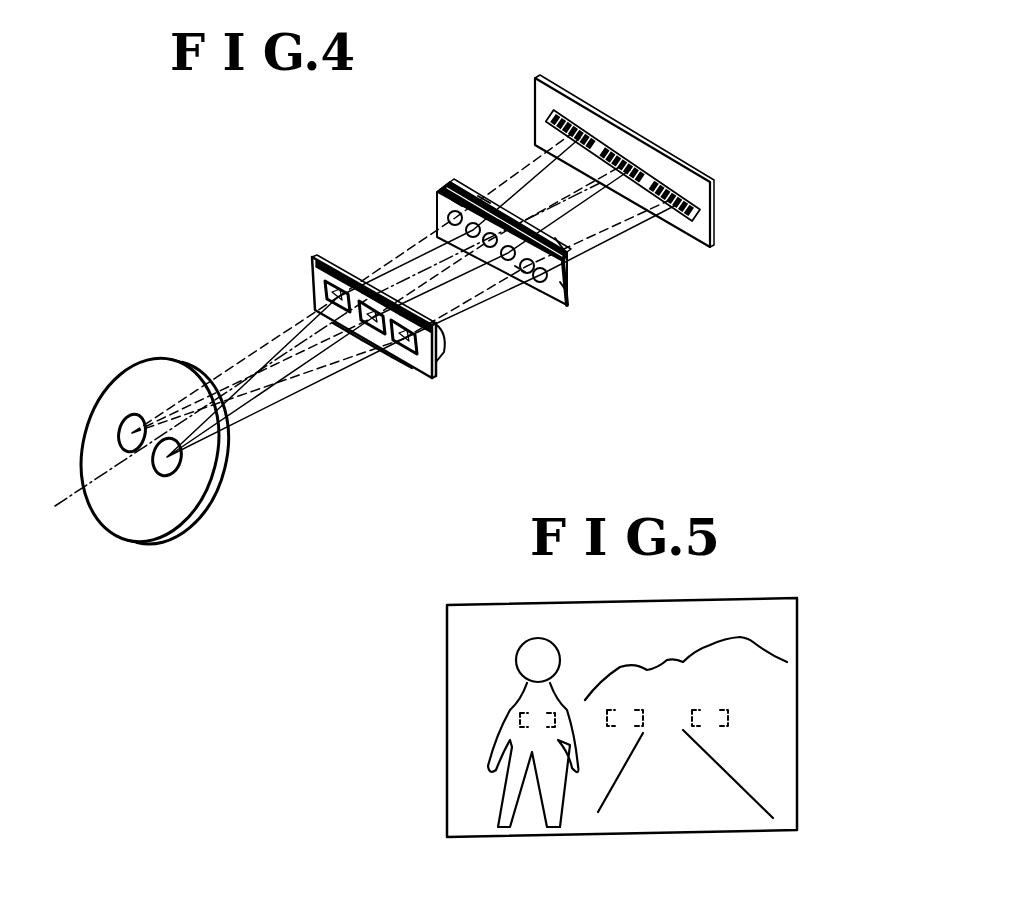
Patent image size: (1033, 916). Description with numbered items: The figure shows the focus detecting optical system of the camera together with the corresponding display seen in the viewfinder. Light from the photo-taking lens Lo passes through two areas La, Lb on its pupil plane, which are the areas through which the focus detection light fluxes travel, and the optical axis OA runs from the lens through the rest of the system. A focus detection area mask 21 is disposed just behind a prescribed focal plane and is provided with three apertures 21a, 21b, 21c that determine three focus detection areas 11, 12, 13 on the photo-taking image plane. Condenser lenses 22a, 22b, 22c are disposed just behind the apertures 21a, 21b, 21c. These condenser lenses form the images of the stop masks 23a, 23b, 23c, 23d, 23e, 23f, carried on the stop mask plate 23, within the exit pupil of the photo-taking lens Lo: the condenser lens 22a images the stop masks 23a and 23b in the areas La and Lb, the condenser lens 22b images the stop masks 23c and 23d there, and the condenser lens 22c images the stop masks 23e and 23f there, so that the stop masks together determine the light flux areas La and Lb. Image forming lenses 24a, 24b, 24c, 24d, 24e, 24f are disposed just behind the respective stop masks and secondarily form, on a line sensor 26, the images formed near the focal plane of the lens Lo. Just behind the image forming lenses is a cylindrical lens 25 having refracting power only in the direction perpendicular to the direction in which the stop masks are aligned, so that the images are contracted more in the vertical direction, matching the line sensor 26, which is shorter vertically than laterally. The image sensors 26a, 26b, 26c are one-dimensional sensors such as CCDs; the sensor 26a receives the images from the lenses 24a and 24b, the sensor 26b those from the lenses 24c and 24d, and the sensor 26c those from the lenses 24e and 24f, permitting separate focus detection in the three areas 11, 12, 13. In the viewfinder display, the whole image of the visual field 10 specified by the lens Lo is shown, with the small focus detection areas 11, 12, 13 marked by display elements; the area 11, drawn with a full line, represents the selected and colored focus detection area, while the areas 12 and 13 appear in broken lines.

In FIG. 5, the whole image of visual field 10 is at (470, 642).
In FIG. 5, the focus detection area 11 is at (520, 720).
In FIG. 5, the focus detection area 12 is at (612, 728).
In FIG. 5, the focus detection area 13 is at (720, 728).
In FIG. 4, the focus detection area mask 21 is at (428, 378).
In FIG. 4, the aperture 21a is at (330, 290).
In FIG. 4, the aperture 21b is at (372, 340).
In FIG. 4, the aperture 21c is at (402, 354).
In FIG. 4, the condenser lens 22a is at (345, 268).
In FIG. 4, the condenser lens 22b is at (378, 272).
In FIG. 4, the condenser lens 22c is at (442, 336).
In FIG. 4, the stop mask plate 23 is at (572, 300).
In FIG. 4, the stop mask 23a is at (455, 208).
In FIG. 4, the stop mask 23b is at (484, 198).
In FIG. 4, the stop mask 23c is at (503, 224).
In FIG. 4, the stop mask 23d is at (560, 244).
In FIG. 4, the stop mask 23e is at (520, 274).
In FIG. 4, the stop mask 23f is at (566, 285).
In FIG. 4, the image forming lens 24a is at (450, 212).
In FIG. 4, the image forming lens 24b is at (467, 226).
In FIG. 4, the image forming lens 24c is at (484, 240).
In FIG. 4, the image forming lens 24d is at (508, 262).
In FIG. 4, the image forming lens 24e is at (529, 275).
In FIG. 4, the image forming lens 24f is at (546, 283).
In FIG. 4, the cylindrical lens 25 is at (452, 182).
In FIG. 4, the line sensor 26 is at (548, 82).
In FIG. 4, the image sensor 26a is at (577, 128).
In FIG. 4, the image sensor 26b is at (624, 162).
In FIG. 4, the image sensor 26c is at (672, 195).
In FIG. 4, the photo-taking lens Lo is at (122, 497).
In FIG. 4, the pupil plane area La is at (177, 484).
In FIG. 4, the pupil plane area Lb is at (118, 450).
In FIG. 4, the optical axis OA is at (55, 518).